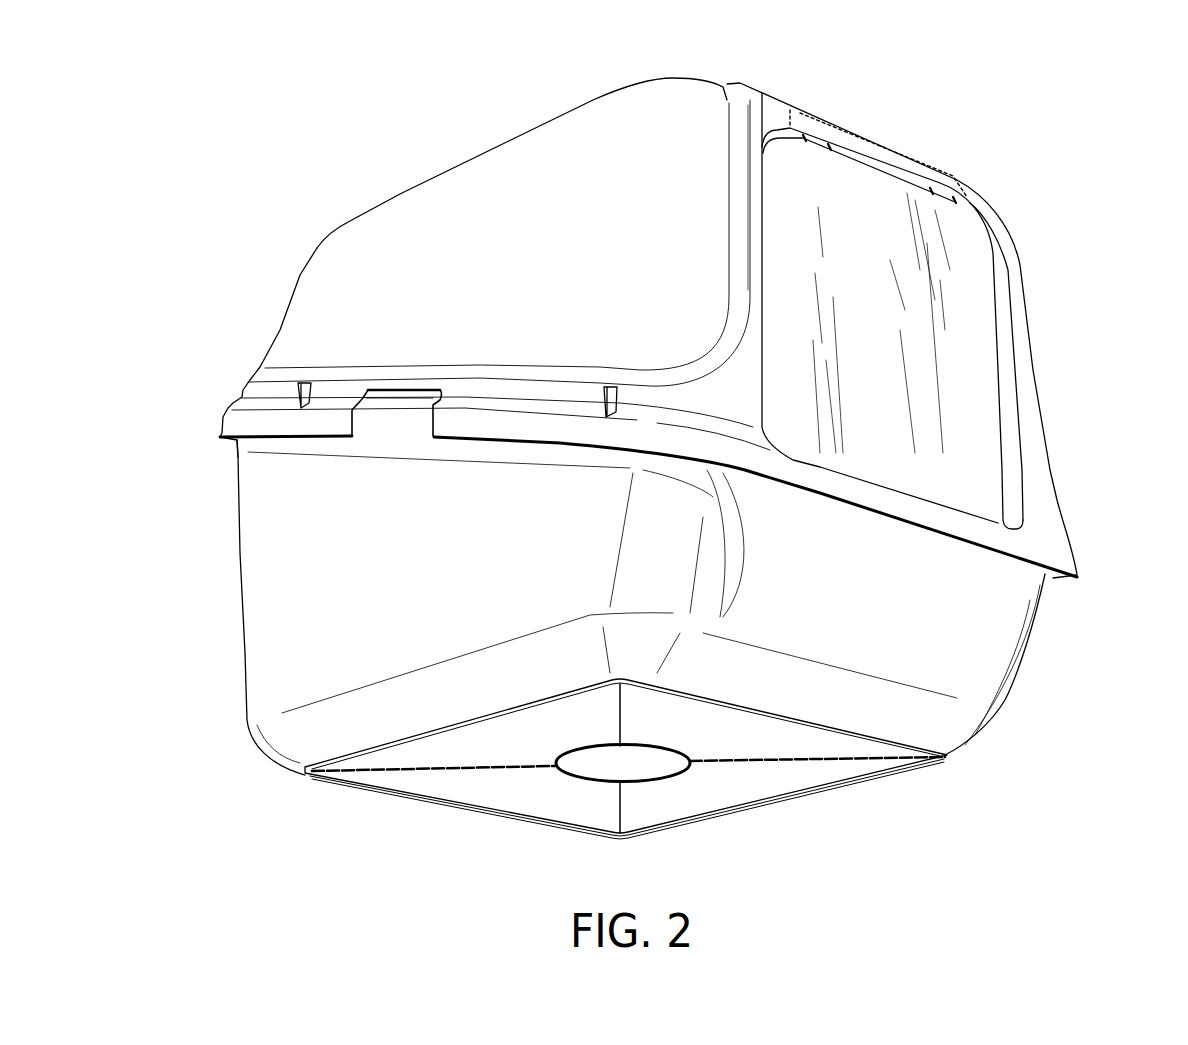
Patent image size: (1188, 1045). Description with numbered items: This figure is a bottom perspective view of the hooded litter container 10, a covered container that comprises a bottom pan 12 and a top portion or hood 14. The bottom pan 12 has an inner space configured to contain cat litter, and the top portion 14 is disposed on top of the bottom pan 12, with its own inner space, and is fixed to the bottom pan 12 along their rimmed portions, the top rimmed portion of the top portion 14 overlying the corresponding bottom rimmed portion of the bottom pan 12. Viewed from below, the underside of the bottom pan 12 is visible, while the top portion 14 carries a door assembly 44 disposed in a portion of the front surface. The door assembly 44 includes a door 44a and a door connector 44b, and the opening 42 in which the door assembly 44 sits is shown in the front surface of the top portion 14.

The litter container 10 is at (923, 100).
The bottom pan 12 is at (280, 603).
The top portion 14 is at (665, 137).
The door opening 42 is at (1027, 493).
The door assembly 44 is at (1123, 122).
The door 44a is at (970, 333).
The door connector 44b is at (943, 182).